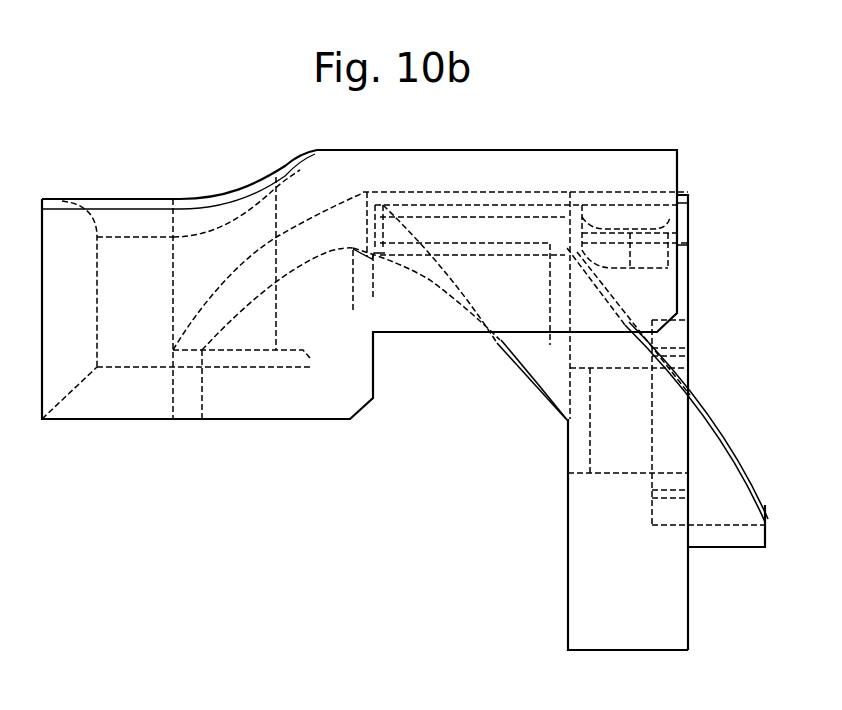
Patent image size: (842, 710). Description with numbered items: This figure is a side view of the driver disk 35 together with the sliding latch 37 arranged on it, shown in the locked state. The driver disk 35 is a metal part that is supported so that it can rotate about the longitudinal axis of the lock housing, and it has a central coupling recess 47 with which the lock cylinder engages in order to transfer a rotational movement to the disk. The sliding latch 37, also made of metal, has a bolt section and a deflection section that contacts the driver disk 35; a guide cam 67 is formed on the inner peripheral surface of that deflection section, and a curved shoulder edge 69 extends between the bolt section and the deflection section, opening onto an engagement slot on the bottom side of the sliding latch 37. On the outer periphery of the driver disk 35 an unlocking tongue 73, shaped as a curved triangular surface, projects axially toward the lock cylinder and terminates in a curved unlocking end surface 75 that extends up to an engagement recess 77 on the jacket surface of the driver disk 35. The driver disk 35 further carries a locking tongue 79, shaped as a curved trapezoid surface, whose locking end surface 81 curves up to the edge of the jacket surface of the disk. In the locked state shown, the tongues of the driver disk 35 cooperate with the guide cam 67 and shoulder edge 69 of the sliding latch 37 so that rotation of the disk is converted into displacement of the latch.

The driver disk 35 is at (667, 613).
The sliding latch 37 is at (243, 400).
The central coupling recess 47 is at (638, 420).
The guide cam 67 is at (625, 213).
The curved shoulder edge 69 is at (316, 232).
The unlocking tongue 73 is at (713, 477).
The curved unlocking end surface 75 is at (763, 500).
The engagement recess 77 is at (690, 227).
The locking tongue 79 is at (542, 350).
The locking end surface 81 is at (507, 342).